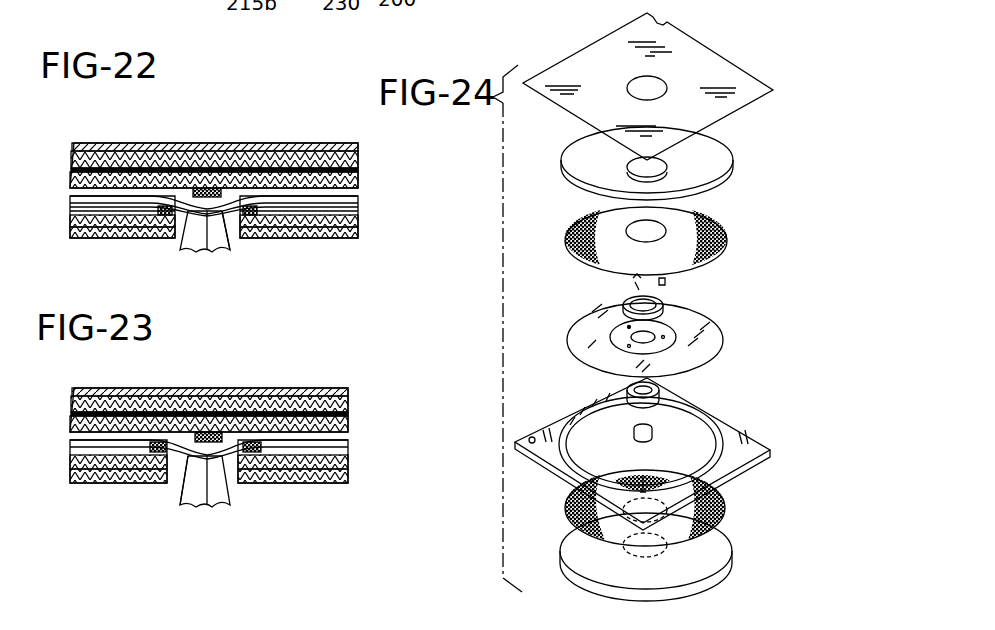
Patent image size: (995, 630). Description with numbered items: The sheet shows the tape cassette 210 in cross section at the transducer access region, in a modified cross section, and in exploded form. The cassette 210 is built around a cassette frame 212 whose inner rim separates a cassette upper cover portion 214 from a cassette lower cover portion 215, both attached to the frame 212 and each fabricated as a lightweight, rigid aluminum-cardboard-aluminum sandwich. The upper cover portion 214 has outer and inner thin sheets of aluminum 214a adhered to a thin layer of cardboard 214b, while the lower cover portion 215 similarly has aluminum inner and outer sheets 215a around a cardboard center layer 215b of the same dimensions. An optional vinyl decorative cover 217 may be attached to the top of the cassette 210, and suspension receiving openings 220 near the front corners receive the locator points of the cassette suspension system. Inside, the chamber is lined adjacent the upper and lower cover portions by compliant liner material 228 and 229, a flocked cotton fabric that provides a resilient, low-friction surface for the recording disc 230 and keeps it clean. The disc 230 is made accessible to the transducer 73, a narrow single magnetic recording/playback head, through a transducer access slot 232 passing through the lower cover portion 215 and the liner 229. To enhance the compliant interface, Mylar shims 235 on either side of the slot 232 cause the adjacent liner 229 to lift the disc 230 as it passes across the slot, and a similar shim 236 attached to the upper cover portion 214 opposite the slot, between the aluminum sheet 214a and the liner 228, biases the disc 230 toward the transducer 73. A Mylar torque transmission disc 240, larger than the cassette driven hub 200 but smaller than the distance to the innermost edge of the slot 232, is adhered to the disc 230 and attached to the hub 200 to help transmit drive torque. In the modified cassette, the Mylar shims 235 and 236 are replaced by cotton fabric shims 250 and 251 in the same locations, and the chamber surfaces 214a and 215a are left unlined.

In FIG. 22, the transducer 73 is at (200, 243).
In FIG. 23, the transducer 73 is at (194, 495).
In FIG. 24, the cassette driven hub 200 is at (634, 392).
In FIG. 22, the tape cassette 210 is at (70, 142).
In FIG. 23, the tape cassette 210 is at (110, 384).
In FIG. 24, the cassette frame 212 is at (752, 440).
In FIG. 24, the cassette upper cover portion 214 is at (717, 165).
In FIG. 22, the thin sheets of aluminum 214a is at (332, 160).
In FIG. 23, the thin sheets of aluminum 214a is at (326, 405).
In FIG. 22, the thin layer of cardboard 214b is at (358, 170).
In FIG. 23, the thin layer of cardboard 214b is at (348, 412).
In FIG. 24, the cassette lower cover portion 215 is at (715, 550).
In FIG. 22, the aluminum inner and outer sheets 215a is at (100, 240).
In FIG. 23, the aluminum inner and outer sheets 215a is at (80, 484).
In FIG. 22, the cardboard center layer 215b is at (312, 236).
In FIG. 23, the cardboard center layer 215b is at (310, 482).
In FIG. 22, the vinyl decorative cover 217 is at (118, 148).
In FIG. 23, the vinyl decorative cover 217 is at (165, 393).
In FIG. 24, the vinyl decorative cover 217 is at (715, 60).
In FIG. 24, the suspension receiving openings 220 is at (532, 444).
In FIG. 22, the compliant liner material 228 is at (358, 192).
In FIG. 24, the compliant liner material 228 is at (720, 238).
In FIG. 22, the compliant liner material 229 is at (358, 215).
In FIG. 24, the compliant liner material 229 is at (720, 505).
In FIG. 22, the recording disc 230 is at (358, 204).
In FIG. 23, the recording disc 230 is at (348, 445).
In FIG. 24, the recording disc 230 is at (695, 316).
In FIG. 22, the transducer access slot 232 is at (222, 218).
In FIG. 23, the transducer access slot 232 is at (175, 462).
In FIG. 22, the Mylar shims 235 is at (160, 233).
In FIG. 22, the shim 236 is at (207, 188).
In FIG. 24, the torque transmission disc 240 is at (670, 337).
In FIG. 23, the cotton fabric shims 250 is at (155, 452).
In FIG. 23, the cotton fabric shim 251 is at (207, 440).